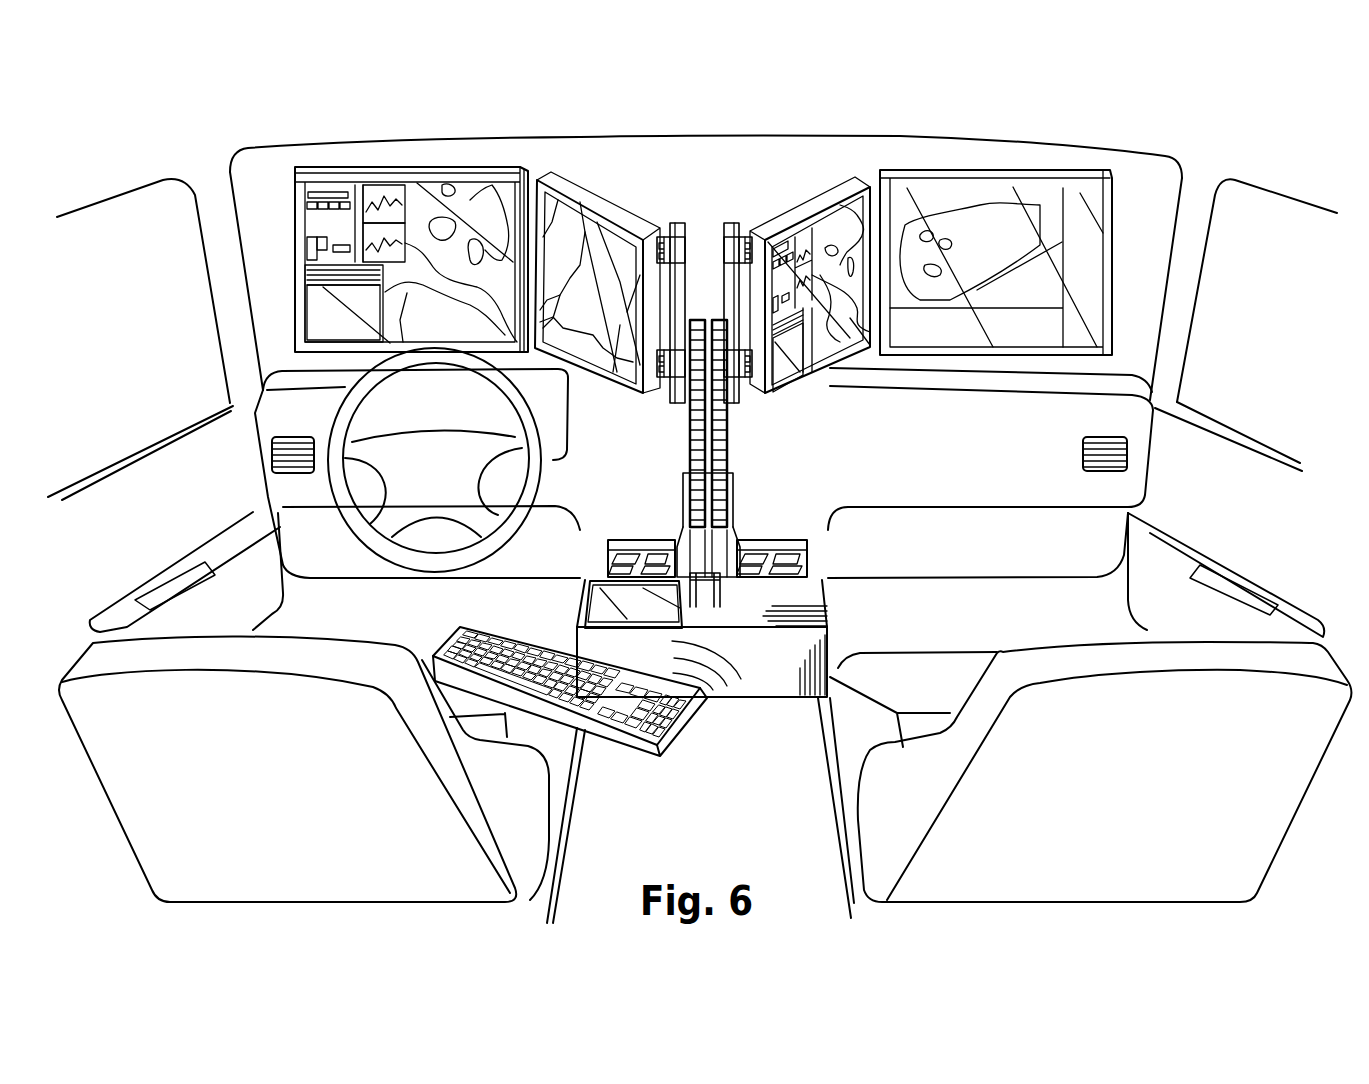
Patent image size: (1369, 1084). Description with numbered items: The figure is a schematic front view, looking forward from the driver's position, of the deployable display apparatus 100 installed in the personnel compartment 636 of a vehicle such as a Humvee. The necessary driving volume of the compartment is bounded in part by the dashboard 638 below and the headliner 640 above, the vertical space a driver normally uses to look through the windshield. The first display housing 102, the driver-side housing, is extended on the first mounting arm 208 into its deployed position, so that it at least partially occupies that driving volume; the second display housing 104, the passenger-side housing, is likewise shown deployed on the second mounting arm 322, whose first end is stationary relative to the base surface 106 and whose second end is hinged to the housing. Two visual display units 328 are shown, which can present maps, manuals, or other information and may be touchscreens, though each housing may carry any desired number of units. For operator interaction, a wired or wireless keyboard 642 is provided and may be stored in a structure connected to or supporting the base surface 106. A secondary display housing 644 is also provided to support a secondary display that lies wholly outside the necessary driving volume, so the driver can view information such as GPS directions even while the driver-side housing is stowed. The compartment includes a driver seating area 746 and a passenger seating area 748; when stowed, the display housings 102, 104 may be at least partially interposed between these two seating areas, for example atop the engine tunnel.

The deployable display apparatus 100 is at (736, 134).
The first display housing 102 is at (437, 174).
The second display housing 104 is at (772, 231).
The base surface 106 is at (797, 612).
The first mounting arm 208 is at (688, 440).
The second mounting arm 322 is at (731, 449).
The visual display unit 328 is at (484, 212).
The personnel compartment 636 is at (190, 396).
The dashboard 638 is at (285, 420).
The headliner 640 is at (322, 148).
The keyboard 642 is at (514, 637).
The secondary display housing 644 is at (607, 607).
The driver seating area 746 is at (237, 799).
The passenger seating area 748 is at (1132, 799).